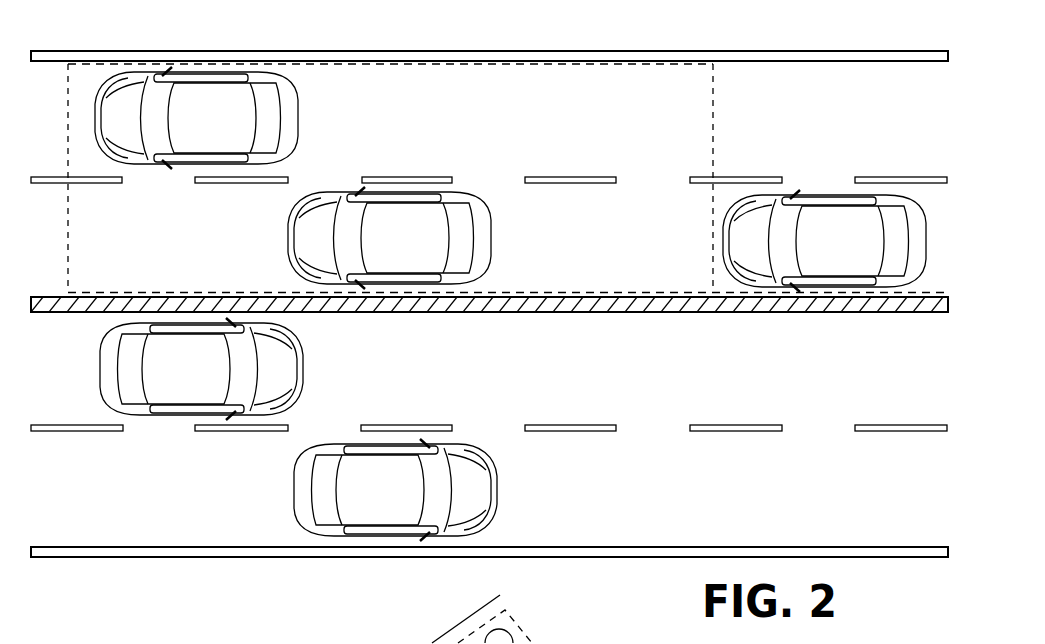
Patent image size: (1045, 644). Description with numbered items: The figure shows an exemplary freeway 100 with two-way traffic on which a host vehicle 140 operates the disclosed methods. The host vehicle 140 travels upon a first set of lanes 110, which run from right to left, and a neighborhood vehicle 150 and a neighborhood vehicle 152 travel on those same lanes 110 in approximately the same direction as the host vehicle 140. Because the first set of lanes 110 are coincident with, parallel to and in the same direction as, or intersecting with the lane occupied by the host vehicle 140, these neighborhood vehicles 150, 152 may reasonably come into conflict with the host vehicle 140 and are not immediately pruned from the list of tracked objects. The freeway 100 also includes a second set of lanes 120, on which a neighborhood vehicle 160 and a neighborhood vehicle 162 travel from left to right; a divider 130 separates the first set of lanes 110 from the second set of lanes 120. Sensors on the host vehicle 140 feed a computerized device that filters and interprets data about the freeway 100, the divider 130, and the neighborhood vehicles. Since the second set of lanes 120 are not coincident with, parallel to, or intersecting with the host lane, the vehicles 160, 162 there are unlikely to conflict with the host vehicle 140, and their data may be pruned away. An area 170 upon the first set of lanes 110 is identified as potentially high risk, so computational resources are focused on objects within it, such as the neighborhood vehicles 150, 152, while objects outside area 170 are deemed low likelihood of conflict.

The freeway 100 is at (900, 112).
The first set of lanes 110 is at (40, 112).
The second set of lanes 120 is at (95, 513).
The divider 130 is at (827, 303).
The host vehicle 140 is at (825, 228).
The neighborhood vehicle 150 is at (409, 231).
The neighborhood vehicle 152 is at (220, 112).
The neighborhood vehicle 160 is at (172, 358).
The neighborhood vehicle 162 is at (387, 480).
The area 170 is at (540, 112).